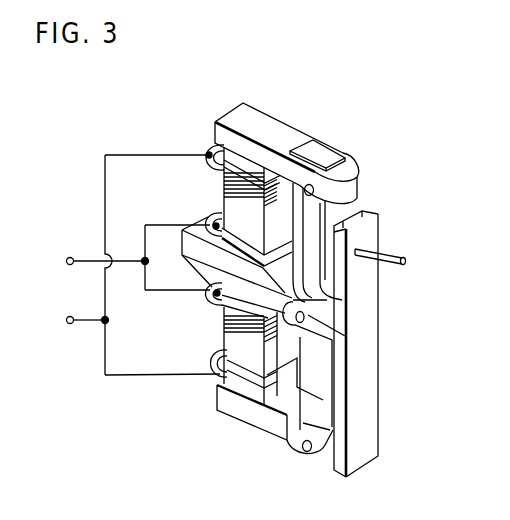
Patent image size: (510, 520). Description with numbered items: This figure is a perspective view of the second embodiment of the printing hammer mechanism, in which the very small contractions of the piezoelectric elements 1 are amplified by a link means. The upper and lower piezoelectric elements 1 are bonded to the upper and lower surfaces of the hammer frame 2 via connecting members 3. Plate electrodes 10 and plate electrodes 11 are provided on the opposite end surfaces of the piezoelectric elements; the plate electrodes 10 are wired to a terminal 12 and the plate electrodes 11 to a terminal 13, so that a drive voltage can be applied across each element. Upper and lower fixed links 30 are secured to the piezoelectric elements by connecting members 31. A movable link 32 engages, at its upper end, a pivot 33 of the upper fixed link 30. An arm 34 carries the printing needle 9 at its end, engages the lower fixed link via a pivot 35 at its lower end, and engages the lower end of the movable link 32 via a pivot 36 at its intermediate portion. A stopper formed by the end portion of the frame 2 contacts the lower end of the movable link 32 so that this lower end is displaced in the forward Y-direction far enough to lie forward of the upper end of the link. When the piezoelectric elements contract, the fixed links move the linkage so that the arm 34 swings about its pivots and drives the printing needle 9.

The piezoelectric element 1 is at (245, 207).
The hammer frame 2 is at (186, 280).
The connecting member 3 is at (186, 292).
The printing needle 9 is at (404, 258).
The plate electrode 10 is at (211, 146).
The plate electrode 11 is at (211, 220).
The terminal 12 is at (64, 322).
The terminal 13 is at (65, 261).
The upper fixed link 30 is at (269, 128).
The connecting member 31 is at (230, 168).
The movable link 32 is at (344, 226).
The pivot 33 is at (315, 186).
The arm 34 is at (363, 405).
The pivot 35 is at (307, 452).
The pivot 36 is at (347, 330).